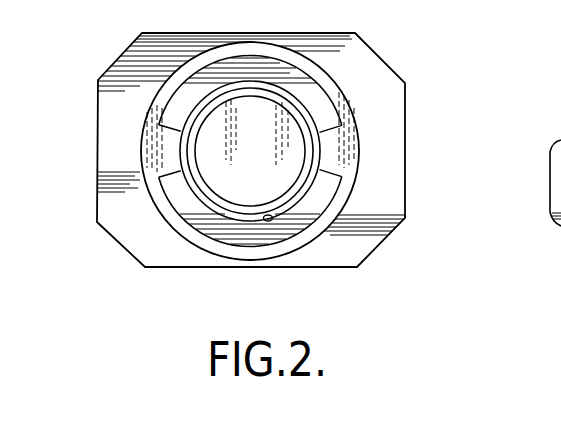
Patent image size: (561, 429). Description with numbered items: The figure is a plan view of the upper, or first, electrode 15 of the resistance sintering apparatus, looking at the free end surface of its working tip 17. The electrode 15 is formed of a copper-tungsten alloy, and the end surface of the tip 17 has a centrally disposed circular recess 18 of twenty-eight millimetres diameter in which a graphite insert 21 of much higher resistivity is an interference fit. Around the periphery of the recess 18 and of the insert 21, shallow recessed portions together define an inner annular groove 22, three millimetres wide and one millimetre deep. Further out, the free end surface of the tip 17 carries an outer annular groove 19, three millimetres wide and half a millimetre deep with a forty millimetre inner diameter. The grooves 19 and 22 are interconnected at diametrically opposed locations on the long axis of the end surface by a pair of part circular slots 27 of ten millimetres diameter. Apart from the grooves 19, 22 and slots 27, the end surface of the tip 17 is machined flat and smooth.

The first electrode 15 is at (410, 232).
The working tip 17 is at (373, 183).
The circular recess 18 is at (299, 182).
The outer annular groove 19 is at (341, 104).
The graphite insert 21 is at (230, 190).
The inner annular groove 22 is at (269, 221).
The part circular slots 27 is at (330, 140).